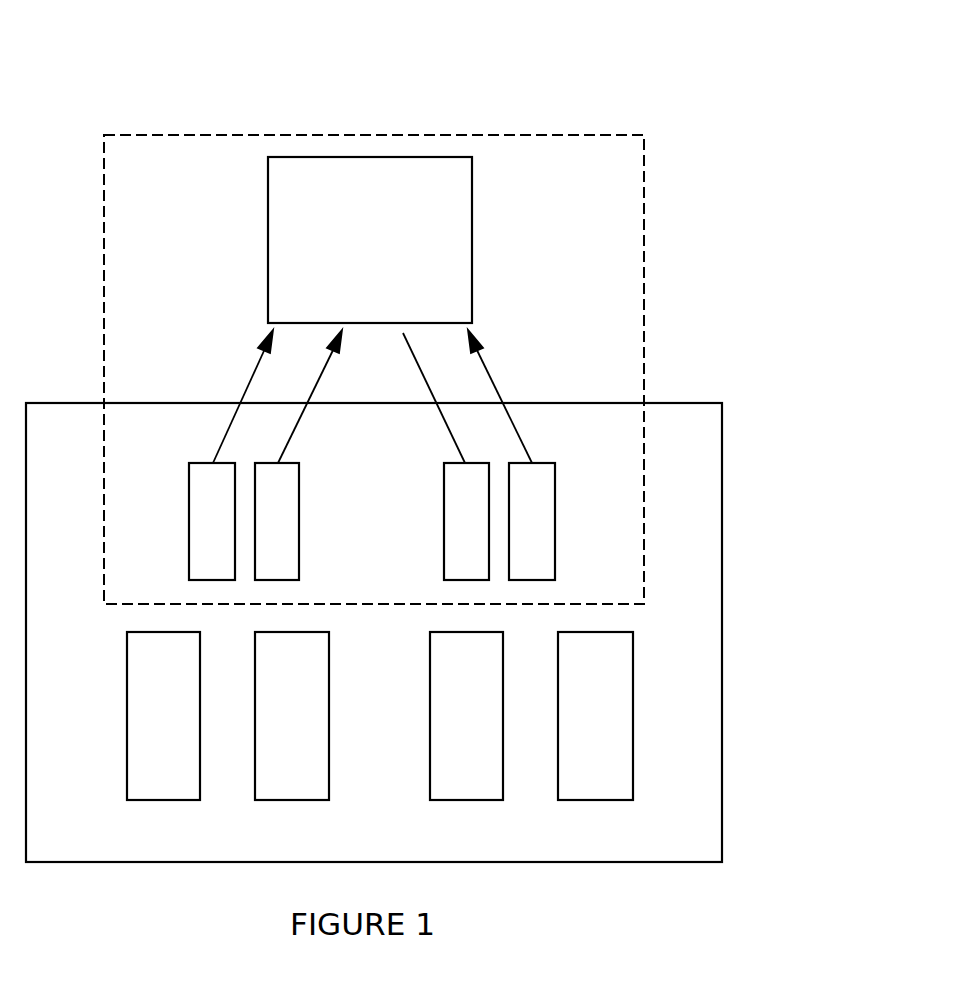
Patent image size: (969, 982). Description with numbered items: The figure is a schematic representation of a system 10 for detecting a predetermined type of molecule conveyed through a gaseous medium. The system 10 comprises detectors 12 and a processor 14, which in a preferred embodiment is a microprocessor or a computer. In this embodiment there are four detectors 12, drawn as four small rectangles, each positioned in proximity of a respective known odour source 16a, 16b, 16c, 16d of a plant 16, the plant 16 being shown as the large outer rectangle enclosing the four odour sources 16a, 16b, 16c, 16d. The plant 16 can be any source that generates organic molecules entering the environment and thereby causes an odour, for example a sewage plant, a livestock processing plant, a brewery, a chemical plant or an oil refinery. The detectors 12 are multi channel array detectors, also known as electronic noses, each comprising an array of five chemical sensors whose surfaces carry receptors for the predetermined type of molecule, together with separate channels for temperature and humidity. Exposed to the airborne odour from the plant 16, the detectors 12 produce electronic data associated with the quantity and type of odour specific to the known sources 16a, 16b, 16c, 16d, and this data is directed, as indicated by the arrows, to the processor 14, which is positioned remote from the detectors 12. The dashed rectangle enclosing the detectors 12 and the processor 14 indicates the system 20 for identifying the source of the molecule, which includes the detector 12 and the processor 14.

The system for detecting a predetermined type of molecule conveyed through a gaseous 10 is at (423, 130).
The detectors 12 is at (197, 543).
The processor 14 is at (455, 250).
The plant 16 is at (693, 550).
The known odour source 16a is at (450, 738).
The known odour source 16b is at (312, 703).
The known odour source 16c is at (615, 692).
The known odour source 16d is at (138, 722).
The system for identifying the source of a predetermined type of molecule conveyed t 20 is at (644, 237).